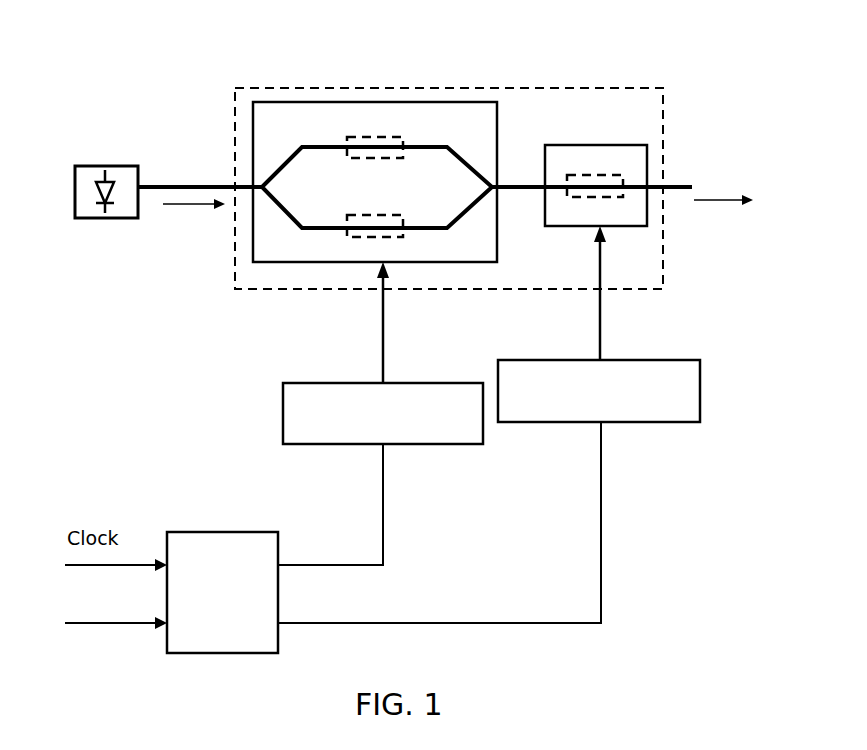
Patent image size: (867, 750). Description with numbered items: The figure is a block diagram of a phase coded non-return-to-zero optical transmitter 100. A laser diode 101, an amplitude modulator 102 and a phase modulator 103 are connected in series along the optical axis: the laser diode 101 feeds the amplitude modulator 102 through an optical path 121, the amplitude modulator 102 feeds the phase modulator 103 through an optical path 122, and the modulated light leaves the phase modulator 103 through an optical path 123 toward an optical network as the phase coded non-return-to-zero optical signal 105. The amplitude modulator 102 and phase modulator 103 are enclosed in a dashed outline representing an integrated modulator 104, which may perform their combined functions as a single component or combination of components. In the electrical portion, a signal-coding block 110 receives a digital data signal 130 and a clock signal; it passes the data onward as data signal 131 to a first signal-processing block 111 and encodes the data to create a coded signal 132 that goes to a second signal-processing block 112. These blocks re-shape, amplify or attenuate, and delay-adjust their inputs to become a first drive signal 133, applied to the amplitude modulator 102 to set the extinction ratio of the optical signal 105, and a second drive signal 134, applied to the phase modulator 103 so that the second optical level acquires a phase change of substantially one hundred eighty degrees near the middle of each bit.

The transmitter 100 is at (678, 642).
The laser diode 101 is at (77, 164).
The amplitude modulator 102 is at (382, 102).
The phase modulator 103 is at (607, 145).
The integrated modulator 104 is at (254, 88).
The optical signal 105 is at (718, 200).
The signal-coding block 110 is at (222, 592).
The first signal-processing block 111 is at (383, 413).
The second signal-processing block 112 is at (599, 391).
The optical path 121 is at (190, 185).
The optical path 122 is at (532, 186).
The optical path 123 is at (683, 185).
The digital data signal 130 is at (102, 623).
The data signal 131 is at (383, 463).
The coded signal 132 is at (602, 442).
The first drive signal 133 is at (383, 302).
The second drive signal 134 is at (602, 302).